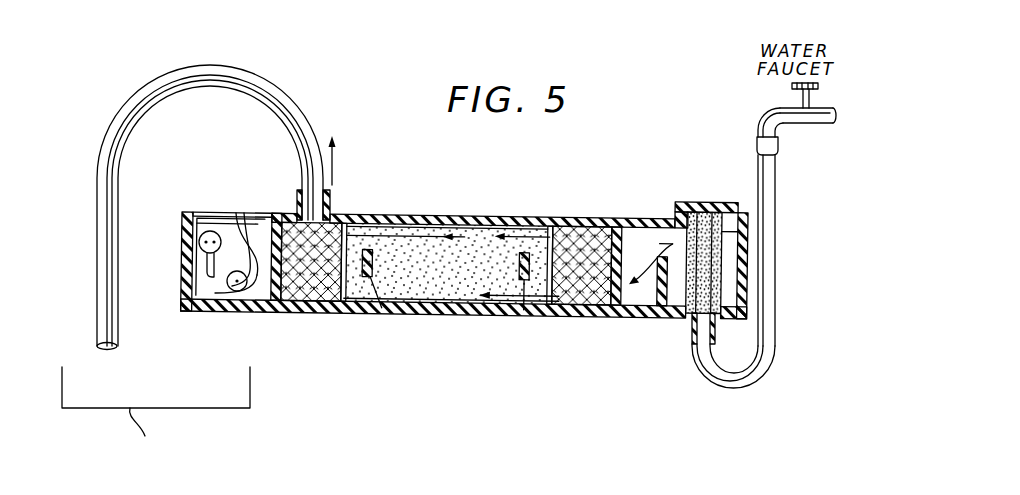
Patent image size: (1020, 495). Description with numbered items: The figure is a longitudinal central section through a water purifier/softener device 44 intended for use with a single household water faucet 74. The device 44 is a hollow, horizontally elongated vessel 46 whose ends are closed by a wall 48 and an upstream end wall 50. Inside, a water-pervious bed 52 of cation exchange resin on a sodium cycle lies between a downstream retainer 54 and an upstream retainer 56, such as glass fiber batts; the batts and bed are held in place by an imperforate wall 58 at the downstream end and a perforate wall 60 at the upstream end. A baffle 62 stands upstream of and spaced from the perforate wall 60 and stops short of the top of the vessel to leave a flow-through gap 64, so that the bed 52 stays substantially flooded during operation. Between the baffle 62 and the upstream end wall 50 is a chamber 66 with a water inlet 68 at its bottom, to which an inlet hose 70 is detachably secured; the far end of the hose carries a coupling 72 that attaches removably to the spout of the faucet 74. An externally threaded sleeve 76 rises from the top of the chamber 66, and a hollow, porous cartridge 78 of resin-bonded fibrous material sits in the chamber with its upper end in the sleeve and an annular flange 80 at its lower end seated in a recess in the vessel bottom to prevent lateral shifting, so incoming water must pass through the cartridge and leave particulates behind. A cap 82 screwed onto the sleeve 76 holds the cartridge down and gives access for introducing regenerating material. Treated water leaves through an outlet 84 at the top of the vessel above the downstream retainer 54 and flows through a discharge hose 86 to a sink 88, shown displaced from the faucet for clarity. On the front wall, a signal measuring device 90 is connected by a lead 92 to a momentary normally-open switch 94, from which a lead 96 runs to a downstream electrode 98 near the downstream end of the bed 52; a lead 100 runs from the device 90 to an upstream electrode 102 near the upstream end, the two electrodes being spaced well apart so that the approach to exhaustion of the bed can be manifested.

The device 44 is at (557, 201).
The vessel 46 is at (452, 317).
The wall 48 is at (183, 275).
The upstream end wall 50 is at (749, 293).
The bed 52 is at (462, 238).
The downstream retainer 54 is at (327, 297).
The upstream retainer 56 is at (584, 317).
The imperforate wall 58 is at (256, 297).
The perforate wall 60 is at (625, 224).
The baffle 62 is at (645, 317).
The flow-through gap 64 is at (651, 250).
The chamber 66 is at (731, 248).
The water inlet 68 is at (690, 323).
The inlet hose 70 is at (776, 244).
The coupling 72 is at (778, 145).
The water faucet 74 is at (770, 118).
The externally threaded sleeve 76 is at (690, 200).
The hollow cartridge 78 is at (688, 287).
The annular flange 80 is at (733, 362).
The cap 82 is at (731, 188).
The outlet 84 is at (330, 192).
The discharge hose 86 is at (98, 306).
The sink 88 is at (156, 411).
The signal measuring device 90 is at (211, 230).
The lead 92 is at (196, 272).
The momentary normally-open switch 94 is at (233, 293).
The lead 96 is at (241, 235).
The downstream electrode 98 is at (384, 317).
The lead 100 is at (511, 318).
The upstream electrode 102 is at (482, 240).